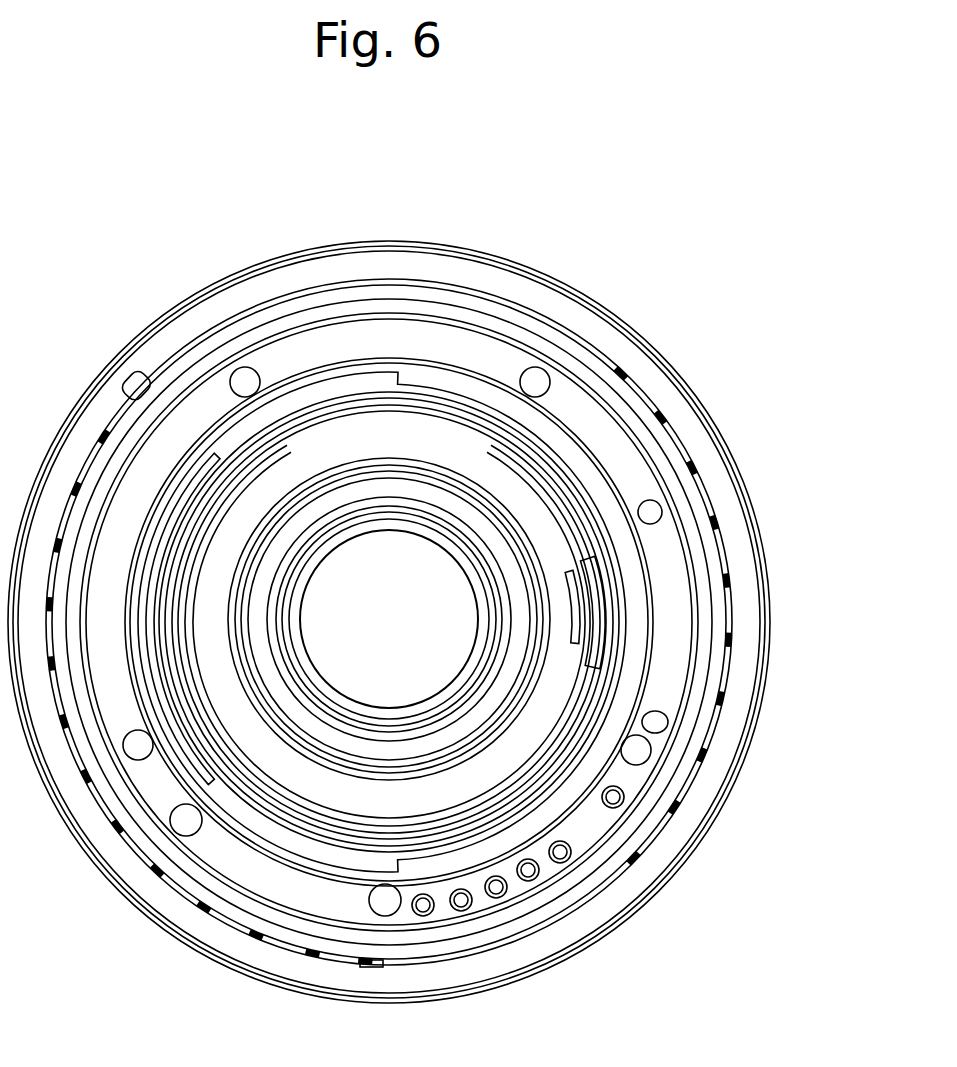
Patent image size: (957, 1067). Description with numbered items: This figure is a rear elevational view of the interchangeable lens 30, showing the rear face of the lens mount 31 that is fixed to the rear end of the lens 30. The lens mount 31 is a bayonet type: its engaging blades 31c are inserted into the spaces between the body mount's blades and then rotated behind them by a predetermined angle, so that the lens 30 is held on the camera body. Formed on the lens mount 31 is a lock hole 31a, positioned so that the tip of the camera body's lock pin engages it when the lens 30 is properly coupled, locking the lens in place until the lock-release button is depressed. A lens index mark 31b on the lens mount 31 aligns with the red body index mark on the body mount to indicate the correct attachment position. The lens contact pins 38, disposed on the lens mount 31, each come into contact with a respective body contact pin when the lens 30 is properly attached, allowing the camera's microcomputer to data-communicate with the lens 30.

The lens 30 is at (651, 168).
The lens mount 31 is at (260, 882).
The lock hole 31a is at (667, 724).
The lens index mark 31b is at (662, 512).
The engaging blades 31c is at (315, 388).
The lens contact pins 38 is at (496, 896).